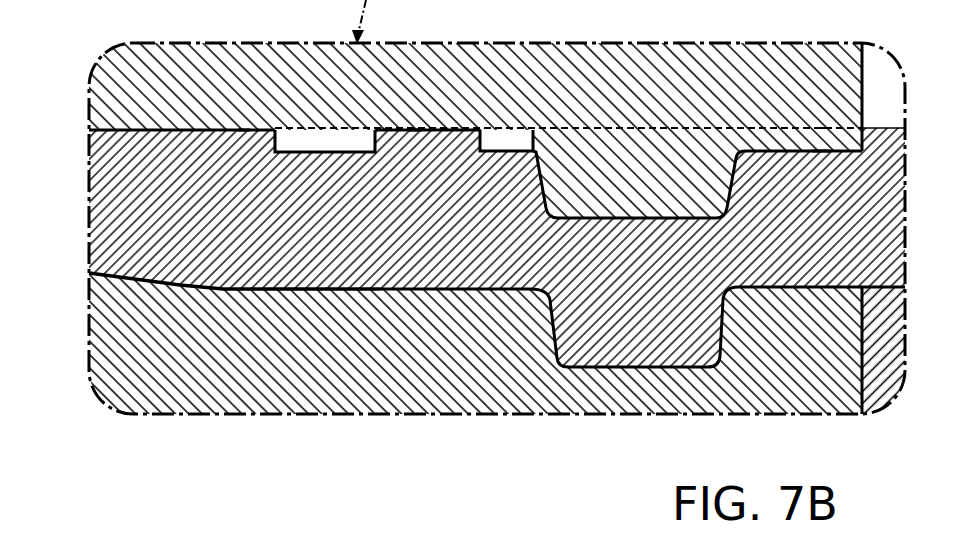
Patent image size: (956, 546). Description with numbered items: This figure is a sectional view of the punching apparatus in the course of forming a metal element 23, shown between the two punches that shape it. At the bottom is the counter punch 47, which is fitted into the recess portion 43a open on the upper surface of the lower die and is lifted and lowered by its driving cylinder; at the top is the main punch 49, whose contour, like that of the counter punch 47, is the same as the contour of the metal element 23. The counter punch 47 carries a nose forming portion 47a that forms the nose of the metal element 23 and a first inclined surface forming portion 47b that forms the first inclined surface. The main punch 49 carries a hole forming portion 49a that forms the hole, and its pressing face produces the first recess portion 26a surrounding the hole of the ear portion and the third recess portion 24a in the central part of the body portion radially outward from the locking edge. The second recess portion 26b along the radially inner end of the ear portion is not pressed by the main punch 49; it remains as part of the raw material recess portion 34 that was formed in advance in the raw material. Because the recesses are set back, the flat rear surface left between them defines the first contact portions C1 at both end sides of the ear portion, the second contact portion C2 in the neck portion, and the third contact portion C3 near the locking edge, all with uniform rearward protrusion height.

The main punch 49 is at (522, 105).
The hole forming portion 49a is at (686, 219).
The counter punch 47 is at (478, 365).
The nose forming portion 47a is at (676, 358).
The first inclined surface forming portion 47b is at (180, 285).
The recess portion 43a is at (862, 358).
The third flat recess portion 24a is at (330, 151).
The second flat recess portion 26b is at (515, 150).
The raw material recess portion 34 is at (555, 75).
The first flat recess portion 26a is at (767, 150).
The metal element 23 is at (821, 145).
The first contact portions C1 is at (822, 132).
The second contact portion C2 is at (416, 128).
The third contact portion C3 is at (244, 128).